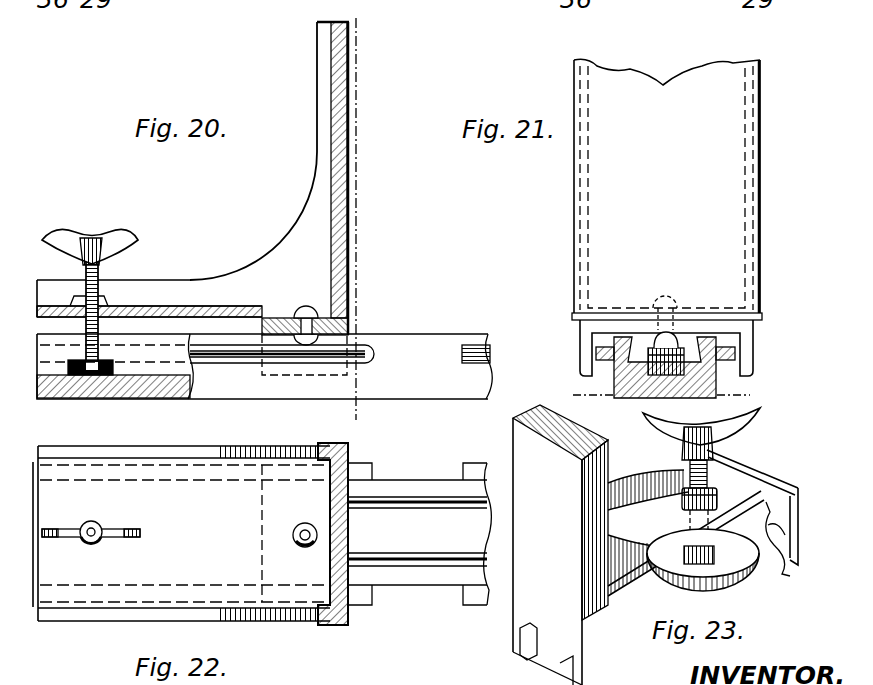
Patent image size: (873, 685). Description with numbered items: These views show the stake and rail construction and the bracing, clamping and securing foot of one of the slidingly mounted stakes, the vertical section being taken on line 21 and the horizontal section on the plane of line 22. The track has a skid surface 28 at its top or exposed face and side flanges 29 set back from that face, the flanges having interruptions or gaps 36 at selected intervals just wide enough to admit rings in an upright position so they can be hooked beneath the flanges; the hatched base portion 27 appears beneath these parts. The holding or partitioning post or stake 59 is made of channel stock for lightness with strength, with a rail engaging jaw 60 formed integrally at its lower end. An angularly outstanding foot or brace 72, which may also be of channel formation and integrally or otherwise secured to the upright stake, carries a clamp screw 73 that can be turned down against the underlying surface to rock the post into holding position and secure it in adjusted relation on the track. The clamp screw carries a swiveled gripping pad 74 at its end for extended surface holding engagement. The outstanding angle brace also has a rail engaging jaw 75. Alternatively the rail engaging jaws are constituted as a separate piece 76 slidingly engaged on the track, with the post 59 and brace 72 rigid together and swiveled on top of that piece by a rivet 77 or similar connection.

In FIG. 20, the section line 21— 21 is at (380, 15).
In FIG. 20, the section line 22— 22 is at (165, 187).
In FIG. 20, the track base member 27 is at (218, 382).
In FIG. 21, the track base member 27 is at (700, 388).
In FIG. 22, the track base member 27 is at (412, 540).
In FIG. 22, the skid surface 28 is at (455, 490).
In FIG. 20, the side flange 29 is at (243, 360).
In FIG. 21, the side flange 29 is at (596, 354).
In FIG. 22, the side flange 29 is at (372, 470).
In FIG. 20, the interruption or gap 36 is at (429, 344).
In FIG. 22, the interruption or gap 36 is at (430, 466).
In FIG. 20, the holding or partitioning post or stake 59 is at (317, 77).
In FIG. 21, the holding or partitioning post or stake 59 is at (667, 189).
In FIG. 22, the holding or partitioning post or stake 59 is at (350, 536).
In FIG. 23, the holding or partitioning post or stake 59 is at (560, 545).
In FIG. 23, the rail engaging jaw 60 is at (522, 659).
In FIG. 20, the angularly outstanding foot or brace 72 is at (138, 307).
In FIG. 22, the angularly outstanding foot or brace 72 is at (107, 572).
In FIG. 23, the angularly outstanding foot or brace 72 is at (748, 483).
In FIG. 20, the clamp screw 73 is at (95, 240).
In FIG. 22, the clamp screw 73 is at (125, 530).
In FIG. 23, the clamp screw 73 is at (747, 425).
In FIG. 20, the swiveled gripping pad 74 is at (94, 376).
In FIG. 21, the swiveled gripping pad 74 is at (647, 373).
In FIG. 23, the swiveled gripping pad 74 is at (677, 583).
In FIG. 23, the rail engaging jaw of brace 75 is at (773, 568).
In FIG. 20, the separate jaw piece 76 is at (350, 327).
In FIG. 21, the separate jaw piece 76 is at (742, 334).
In FIG. 22, the separate jaw piece 76 is at (262, 546).
In FIG. 20, the rivet 77 is at (300, 300).
In FIG. 21, the rivet 77 is at (669, 303).
In FIG. 22, the rivet 77 is at (304, 526).